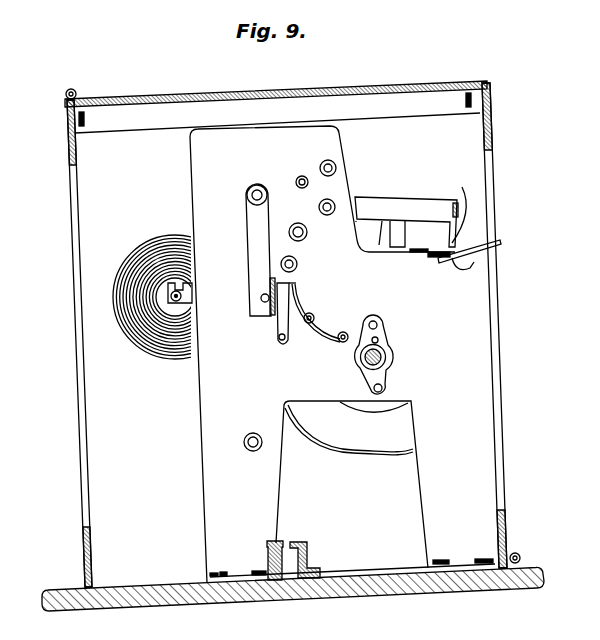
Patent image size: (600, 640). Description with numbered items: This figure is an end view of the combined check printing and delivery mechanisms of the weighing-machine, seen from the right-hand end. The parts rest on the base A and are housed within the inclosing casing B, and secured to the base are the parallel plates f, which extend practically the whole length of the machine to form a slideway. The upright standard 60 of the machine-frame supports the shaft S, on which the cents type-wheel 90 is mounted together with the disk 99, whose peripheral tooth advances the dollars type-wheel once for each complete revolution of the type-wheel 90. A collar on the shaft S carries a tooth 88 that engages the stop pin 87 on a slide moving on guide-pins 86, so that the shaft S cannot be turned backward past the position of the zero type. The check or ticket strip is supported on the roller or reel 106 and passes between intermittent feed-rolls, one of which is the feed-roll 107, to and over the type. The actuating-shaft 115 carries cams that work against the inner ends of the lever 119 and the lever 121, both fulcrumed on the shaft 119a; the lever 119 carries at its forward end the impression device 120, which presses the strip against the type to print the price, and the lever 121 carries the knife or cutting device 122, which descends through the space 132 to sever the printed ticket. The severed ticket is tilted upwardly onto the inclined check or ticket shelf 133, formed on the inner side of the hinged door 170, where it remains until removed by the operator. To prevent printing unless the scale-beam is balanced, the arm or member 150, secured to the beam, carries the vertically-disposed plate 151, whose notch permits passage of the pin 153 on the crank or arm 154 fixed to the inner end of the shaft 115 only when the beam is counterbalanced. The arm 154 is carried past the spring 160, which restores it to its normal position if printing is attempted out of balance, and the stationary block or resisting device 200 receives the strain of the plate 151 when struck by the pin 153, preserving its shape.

The standard 60 is at (217, 504).
The guide-pins 86 is at (378, 327).
The stop pin 87 is at (380, 342).
The tooth 88 is at (373, 342).
The cents type-wheel 90 is at (368, 454).
The disk 99 is at (376, 406).
The roller or reel 106 is at (168, 304).
The intermittent feed-roll 107 is at (143, 258).
The actuating-shaft 115 is at (259, 186).
The lever 119 is at (379, 245).
The shaft 119a is at (356, 221).
The impression device 120 is at (397, 252).
The lever 121 is at (409, 205).
The knife or cutting device 122 is at (465, 198).
The space 132 is at (443, 259).
The check or ticket shelf 133 is at (462, 271).
The arm or member 150 is at (278, 325).
The vertically-disposed plate 151 is at (279, 283).
The pin 153 is at (262, 302).
The crank or arm 154 is at (256, 236).
The spring 160 is at (318, 341).
The hinged door 170 is at (497, 394).
The stationary block or resisting device 200 is at (302, 334).
The base A is at (86, 609).
The inclosing casing B is at (75, 447).
The shaft S is at (385, 360).
The parallel plates f is at (268, 556).